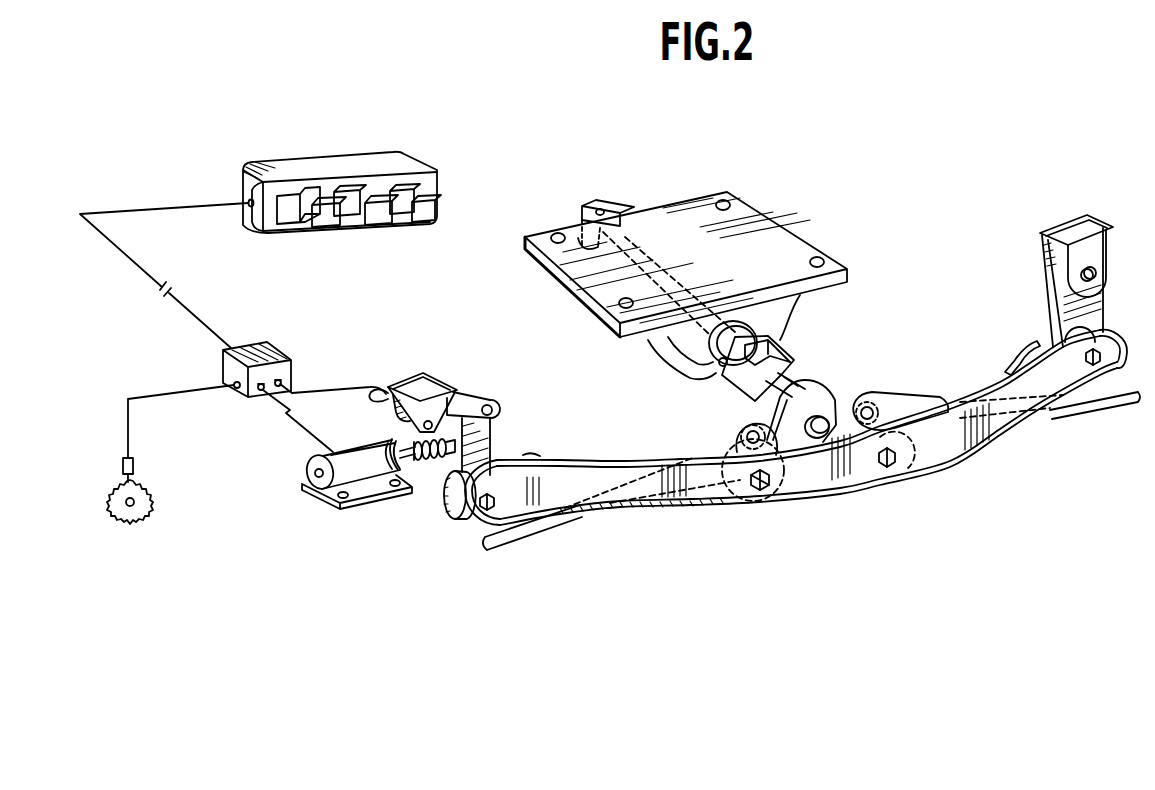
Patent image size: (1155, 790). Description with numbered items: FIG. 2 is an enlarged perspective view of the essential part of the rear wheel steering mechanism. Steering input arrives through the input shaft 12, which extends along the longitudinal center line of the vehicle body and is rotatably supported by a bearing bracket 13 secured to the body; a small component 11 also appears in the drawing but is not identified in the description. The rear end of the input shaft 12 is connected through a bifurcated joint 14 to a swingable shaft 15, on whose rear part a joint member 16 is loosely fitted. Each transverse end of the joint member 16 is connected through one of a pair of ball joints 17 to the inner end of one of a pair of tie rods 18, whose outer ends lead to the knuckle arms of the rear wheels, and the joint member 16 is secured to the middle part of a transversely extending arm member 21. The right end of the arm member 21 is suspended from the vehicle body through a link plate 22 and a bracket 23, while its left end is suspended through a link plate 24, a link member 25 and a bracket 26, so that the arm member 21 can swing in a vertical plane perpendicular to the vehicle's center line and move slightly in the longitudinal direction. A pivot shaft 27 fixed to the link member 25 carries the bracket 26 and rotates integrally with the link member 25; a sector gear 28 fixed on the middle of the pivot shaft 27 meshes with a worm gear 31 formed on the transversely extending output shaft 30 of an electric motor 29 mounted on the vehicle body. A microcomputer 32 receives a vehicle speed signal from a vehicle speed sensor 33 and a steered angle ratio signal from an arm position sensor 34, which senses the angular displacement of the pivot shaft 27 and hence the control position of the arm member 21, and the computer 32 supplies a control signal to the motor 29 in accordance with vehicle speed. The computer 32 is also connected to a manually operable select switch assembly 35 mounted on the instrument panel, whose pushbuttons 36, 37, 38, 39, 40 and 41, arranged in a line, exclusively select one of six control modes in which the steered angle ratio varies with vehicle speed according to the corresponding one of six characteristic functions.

The mounting tab 11 is at (600, 203).
The input shaft 12 is at (637, 250).
The bearing bracket 13 is at (772, 222).
The bifurcated joint 14 is at (785, 359).
The swingable shaft 15 is at (780, 406).
The joint member 16 is at (813, 383).
The ball joints 17 is at (875, 405).
The tie rods 18 is at (1096, 405).
The arm member 21 is at (985, 445).
The link plate 22 is at (1105, 300).
The bracket 23 is at (1090, 242).
The link plate 24 is at (492, 446).
The link member 25 is at (457, 394).
The bracket 26 is at (412, 380).
The pivot shaft 27 is at (431, 419).
The sector gear 28 is at (412, 441).
The electric motor 29 is at (352, 488).
The output shaft 30 is at (392, 472).
The worm gear 31 is at (430, 462).
The microcomputer 32 is at (280, 352).
The vehicle speed sensor 33 is at (140, 474).
The arm position sensor 34 is at (383, 390).
The select switch assembly 35 is at (420, 164).
The pushbutton 36 is at (290, 194).
The pushbutton 37 is at (325, 215).
The pushbutton 38 is at (345, 199).
The pushbutton 39 is at (378, 212).
The pushbutton 40 is at (400, 197).
The pushbutton 41 is at (425, 210).